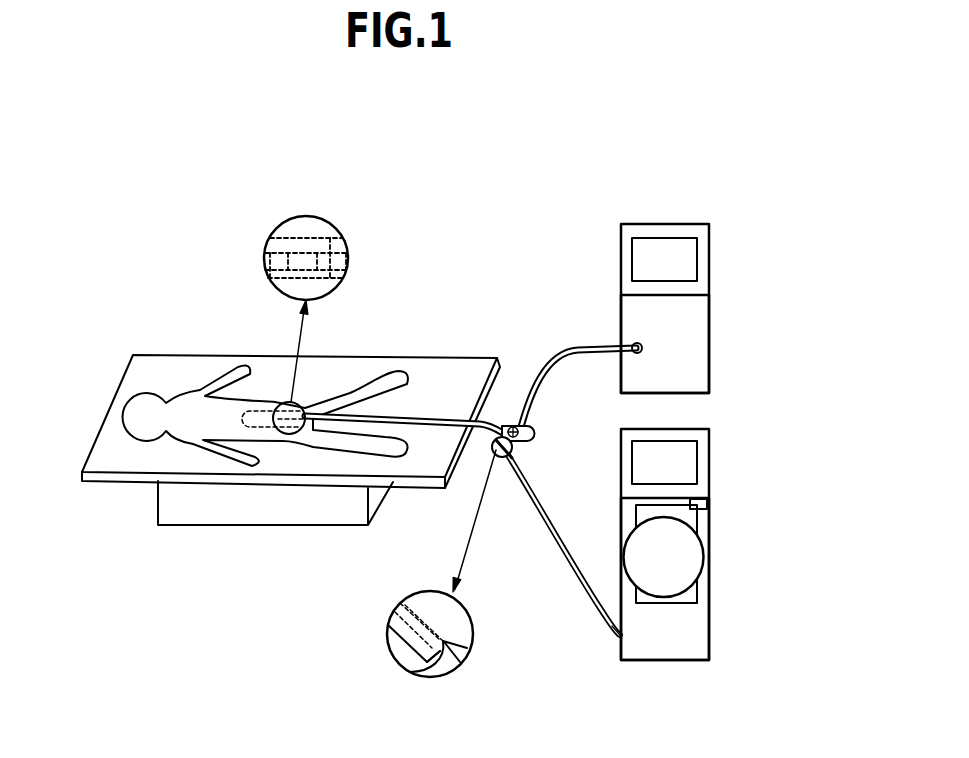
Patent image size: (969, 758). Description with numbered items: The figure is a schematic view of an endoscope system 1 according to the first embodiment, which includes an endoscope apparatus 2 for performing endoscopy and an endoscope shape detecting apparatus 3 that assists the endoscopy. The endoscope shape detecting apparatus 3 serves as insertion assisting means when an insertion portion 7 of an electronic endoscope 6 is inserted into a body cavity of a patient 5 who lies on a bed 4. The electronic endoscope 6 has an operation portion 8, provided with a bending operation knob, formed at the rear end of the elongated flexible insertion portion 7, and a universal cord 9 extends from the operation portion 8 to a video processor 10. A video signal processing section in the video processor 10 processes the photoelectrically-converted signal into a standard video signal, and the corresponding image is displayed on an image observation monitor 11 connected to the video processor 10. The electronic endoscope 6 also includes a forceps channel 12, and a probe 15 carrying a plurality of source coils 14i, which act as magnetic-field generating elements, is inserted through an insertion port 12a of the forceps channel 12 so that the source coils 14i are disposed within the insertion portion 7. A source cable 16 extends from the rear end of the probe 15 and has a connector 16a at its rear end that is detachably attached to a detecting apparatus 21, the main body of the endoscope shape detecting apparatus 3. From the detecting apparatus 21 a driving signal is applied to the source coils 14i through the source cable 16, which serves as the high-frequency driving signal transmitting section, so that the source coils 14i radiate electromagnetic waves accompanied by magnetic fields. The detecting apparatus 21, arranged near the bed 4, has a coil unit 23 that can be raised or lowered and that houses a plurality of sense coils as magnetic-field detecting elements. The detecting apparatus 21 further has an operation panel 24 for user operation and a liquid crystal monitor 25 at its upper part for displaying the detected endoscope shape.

The endoscope system 1 is at (200, 594).
The endoscope apparatus 2 is at (566, 261).
The endoscope shape detecting apparatus 3 is at (541, 628).
The bed 4 is at (478, 357).
The patient 5 is at (124, 408).
The electronic endoscope 6 is at (542, 428).
The insertion portion 7 is at (435, 413).
The operation portion 8 is at (537, 441).
The universal cord 9 is at (577, 345).
The video processor 10 is at (711, 346).
The image observation monitor 11 is at (711, 259).
The forceps channel 12 is at (400, 650).
The insertion port 12a is at (412, 672).
The source coils 14i is at (280, 252).
The probe 15 is at (270, 290).
The source cable 16 is at (548, 535).
The connector 16a is at (617, 639).
The detecting apparatus 21 is at (711, 626).
The coil unit 23 is at (691, 548).
The operation panel 24 is at (708, 502).
The liquid crystal monitor 25 is at (711, 452).